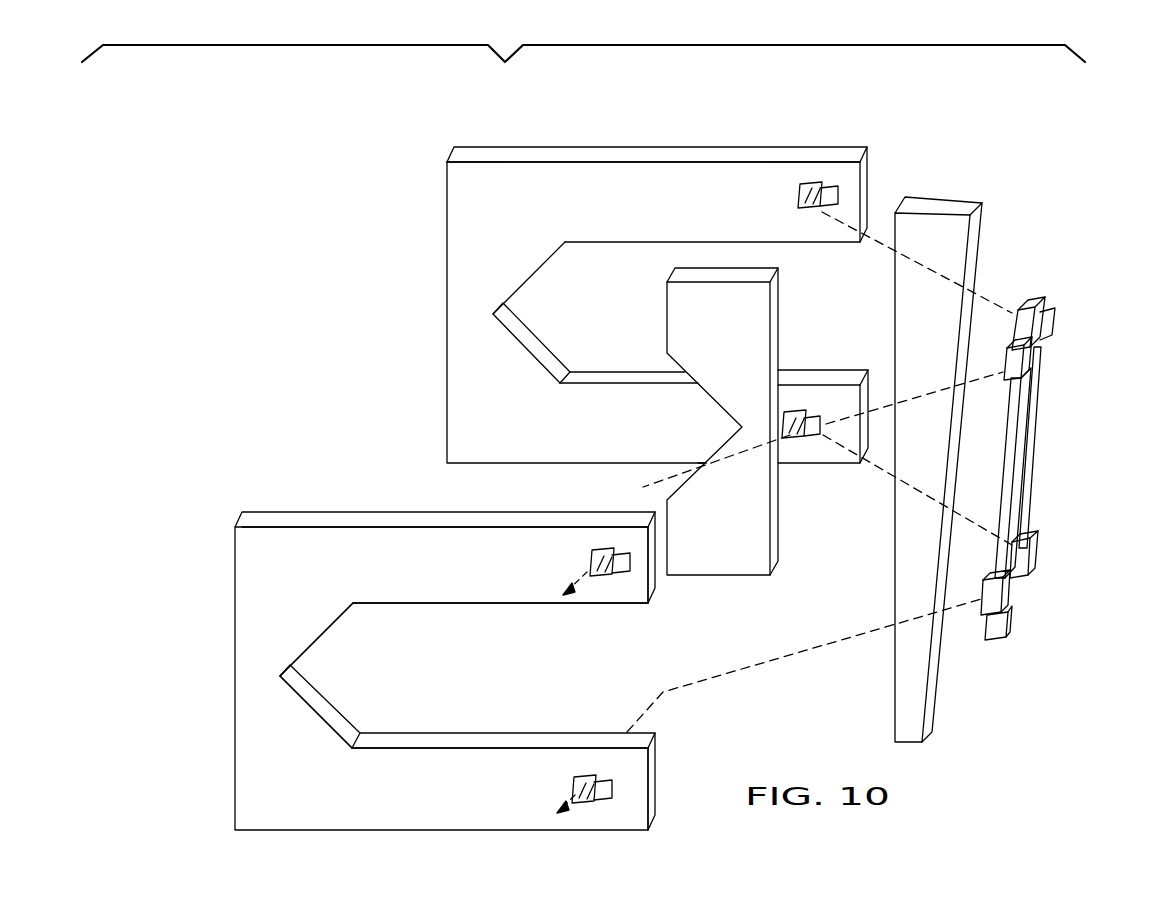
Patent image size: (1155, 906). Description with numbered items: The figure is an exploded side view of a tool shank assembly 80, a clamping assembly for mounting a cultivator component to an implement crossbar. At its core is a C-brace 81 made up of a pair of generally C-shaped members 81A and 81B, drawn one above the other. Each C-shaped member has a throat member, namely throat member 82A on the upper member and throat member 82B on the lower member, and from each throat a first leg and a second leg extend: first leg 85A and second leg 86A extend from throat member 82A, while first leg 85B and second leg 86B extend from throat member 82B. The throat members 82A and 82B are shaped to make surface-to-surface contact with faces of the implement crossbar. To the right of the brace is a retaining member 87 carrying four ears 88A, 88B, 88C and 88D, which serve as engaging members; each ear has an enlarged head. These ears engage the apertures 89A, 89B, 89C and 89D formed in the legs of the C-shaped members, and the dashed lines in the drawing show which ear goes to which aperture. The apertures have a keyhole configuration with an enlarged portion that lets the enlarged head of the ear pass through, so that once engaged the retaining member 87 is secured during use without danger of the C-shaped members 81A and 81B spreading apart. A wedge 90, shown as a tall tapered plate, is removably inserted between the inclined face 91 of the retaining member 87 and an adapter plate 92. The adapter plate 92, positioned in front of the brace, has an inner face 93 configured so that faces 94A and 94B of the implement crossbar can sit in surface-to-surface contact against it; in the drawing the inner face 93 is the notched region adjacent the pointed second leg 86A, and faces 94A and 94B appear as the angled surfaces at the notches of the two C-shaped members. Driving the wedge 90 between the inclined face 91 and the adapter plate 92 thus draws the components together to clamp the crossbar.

The tool shank assembly 80 is at (583, 31).
The C-brace 81 is at (378, 367).
The C-shaped member 81A is at (447, 281).
The C-shaped member 81B is at (258, 497).
The throat member 82A is at (510, 350).
The throat member 82B is at (297, 641).
The first leg 85A is at (750, 153).
The first leg 85B is at (450, 593).
The second leg 86A is at (622, 378).
The second leg 86B is at (392, 765).
The retaining member 87 is at (1030, 467).
The ear 88A is at (1053, 325).
The ear 88B is at (1030, 378).
The ear 88C is at (1032, 553).
The ear 88D is at (1012, 622).
The aperture 89A is at (797, 192).
The aperture 89B is at (795, 442).
The aperture 89C is at (602, 572).
The aperture 89D is at (570, 778).
The wedge 90 is at (933, 676).
The inclined face 91 is at (1003, 465).
The adapter plate 92 is at (766, 523).
The inner face 93 is at (692, 468).
The face of implement crossbar 94A is at (558, 362).
The face of implement crossbar 94B is at (358, 712).